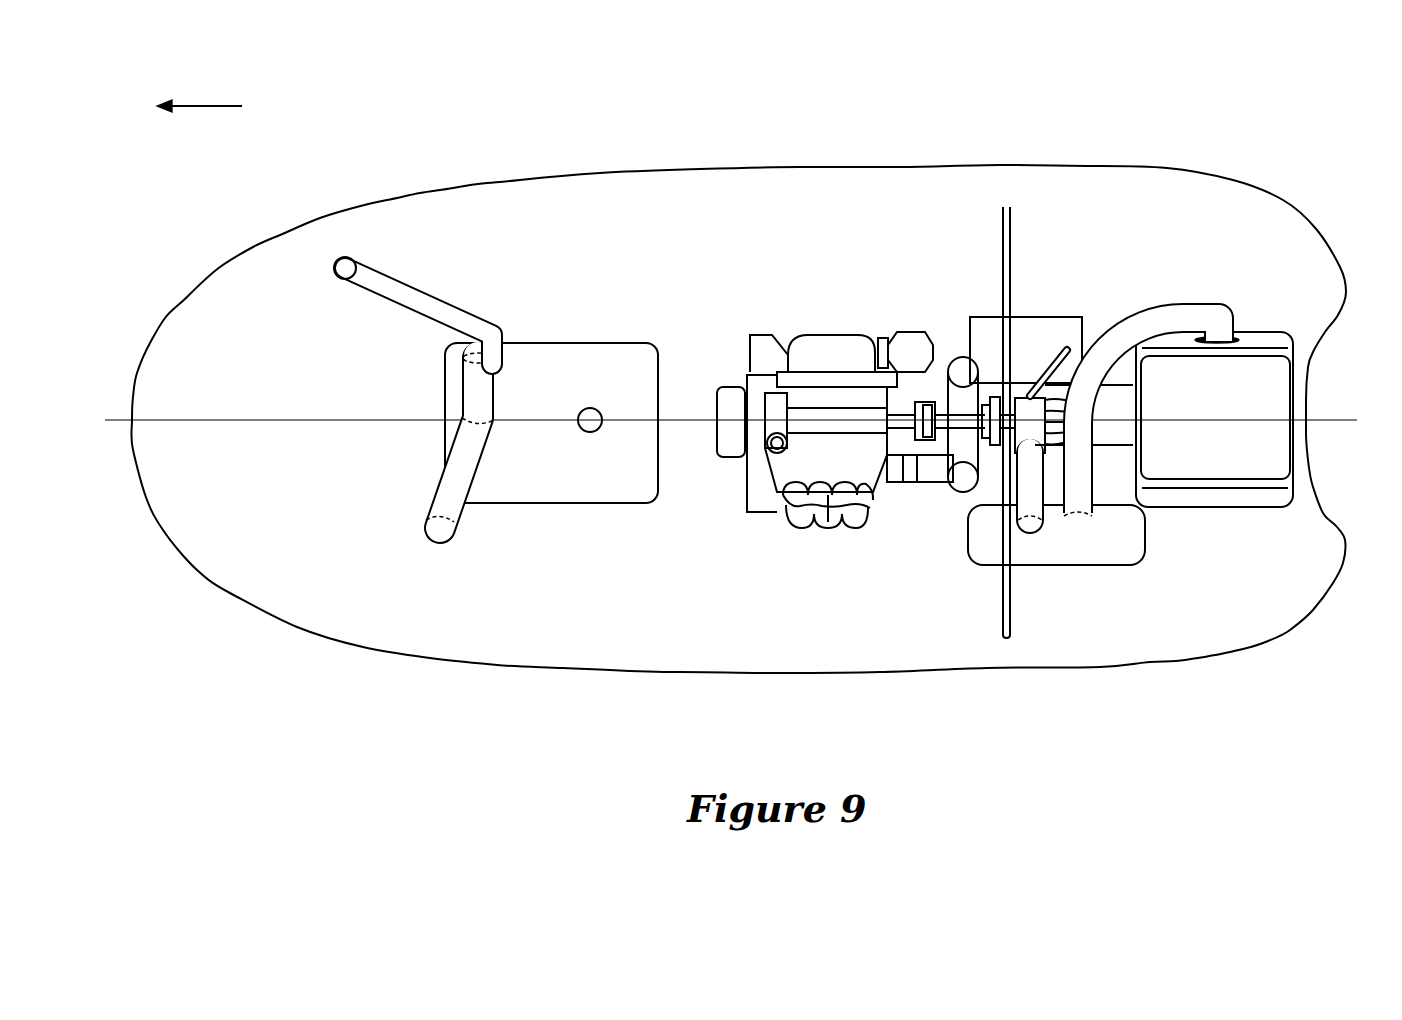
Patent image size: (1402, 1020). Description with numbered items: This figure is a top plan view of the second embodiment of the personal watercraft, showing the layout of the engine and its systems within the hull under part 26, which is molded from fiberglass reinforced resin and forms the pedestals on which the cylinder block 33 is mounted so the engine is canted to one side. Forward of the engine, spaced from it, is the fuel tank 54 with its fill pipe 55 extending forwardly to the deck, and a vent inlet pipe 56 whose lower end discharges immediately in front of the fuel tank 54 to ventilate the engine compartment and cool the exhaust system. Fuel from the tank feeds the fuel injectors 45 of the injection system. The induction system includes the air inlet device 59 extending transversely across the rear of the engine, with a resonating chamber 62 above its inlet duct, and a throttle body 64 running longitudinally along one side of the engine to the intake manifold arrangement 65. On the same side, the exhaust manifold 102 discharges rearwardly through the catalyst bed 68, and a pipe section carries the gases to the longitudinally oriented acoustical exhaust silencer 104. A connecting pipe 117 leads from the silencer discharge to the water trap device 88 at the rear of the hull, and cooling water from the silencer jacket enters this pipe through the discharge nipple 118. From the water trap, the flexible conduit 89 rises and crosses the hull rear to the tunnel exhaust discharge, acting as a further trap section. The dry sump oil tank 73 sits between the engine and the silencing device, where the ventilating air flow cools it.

The hull under part 26 is at (1097, 670).
The cylinder block 33 is at (828, 421).
The fuel injectors 45 is at (1228, 519).
The fuel tank 54 is at (608, 505).
The fill pipe 55 is at (425, 293).
The vent inlet pipe 56 is at (485, 463).
The air inlet device 59 is at (930, 485).
The resonating chamber 62 is at (930, 400).
The throttle body 64 is at (888, 483).
The intake manifold arrangement 65 is at (822, 533).
The catalyst bed 68 is at (908, 330).
The dry sump oil tank 73 is at (728, 443).
The water trap device 88 is at (1083, 567).
The flexible conduit 89 is at (1176, 303).
The exhaust manifold 102 is at (808, 335).
The acoustical exhaust silencer 104 is at (1033, 317).
The connecting pipe 117 is at (1035, 483).
The discharge nipple 118 is at (1043, 398).